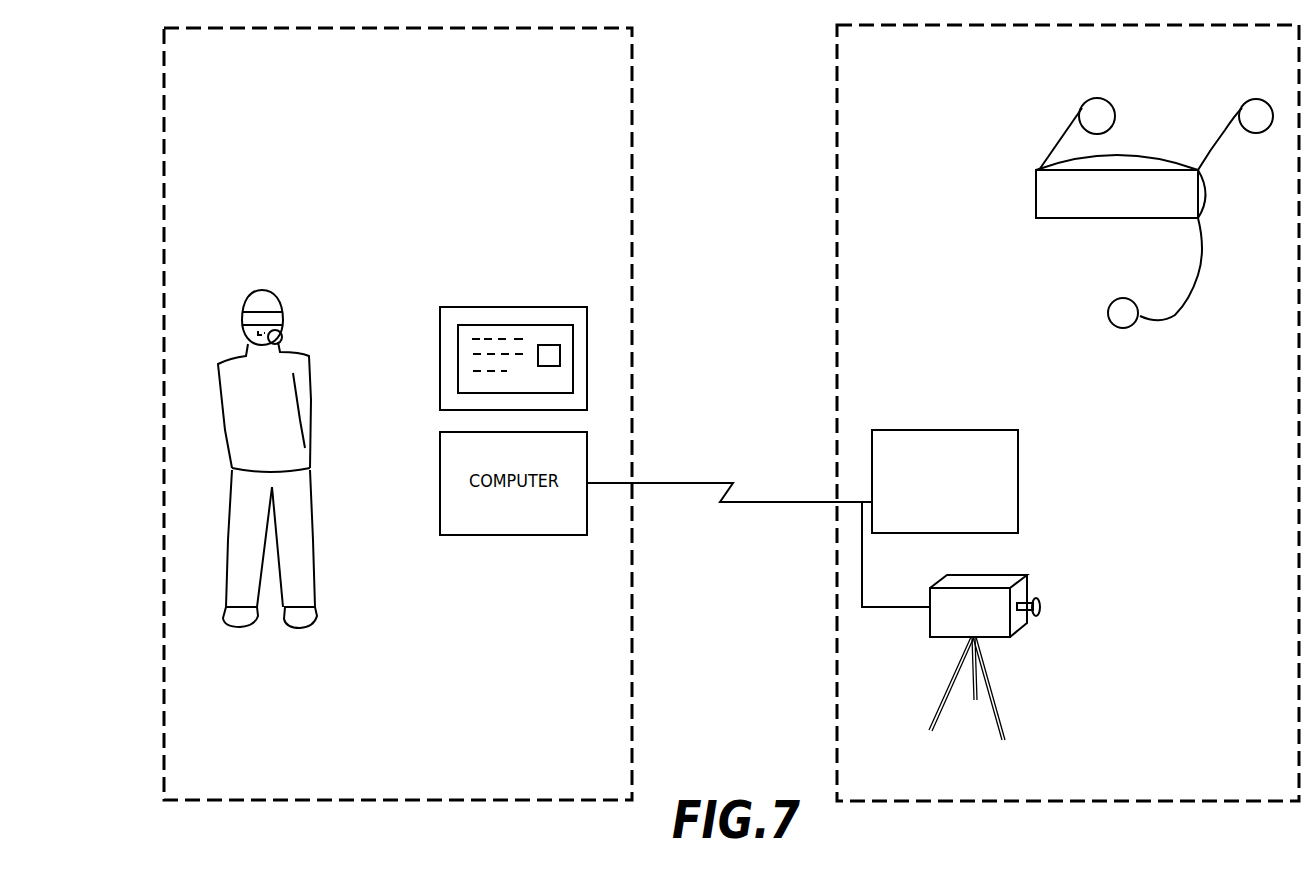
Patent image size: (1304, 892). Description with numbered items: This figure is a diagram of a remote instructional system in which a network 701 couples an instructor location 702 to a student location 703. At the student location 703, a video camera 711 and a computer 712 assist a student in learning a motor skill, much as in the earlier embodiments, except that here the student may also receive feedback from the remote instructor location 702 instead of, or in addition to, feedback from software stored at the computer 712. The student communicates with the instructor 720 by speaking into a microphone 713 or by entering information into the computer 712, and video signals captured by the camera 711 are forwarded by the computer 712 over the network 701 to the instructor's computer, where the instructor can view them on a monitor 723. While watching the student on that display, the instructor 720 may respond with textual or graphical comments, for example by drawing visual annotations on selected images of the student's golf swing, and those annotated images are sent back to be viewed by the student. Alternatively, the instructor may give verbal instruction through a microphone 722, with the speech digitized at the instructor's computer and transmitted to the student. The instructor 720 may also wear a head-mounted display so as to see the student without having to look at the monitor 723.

The network 701 is at (680, 481).
The instructor location 702 is at (632, 698).
The student location 703 is at (837, 660).
The video camera 711 is at (993, 577).
The computer 712 is at (963, 428).
The microphone 713 is at (1180, 317).
The instructor 720 is at (312, 517).
The microphone 722 is at (283, 333).
The monitor 723 is at (510, 305).